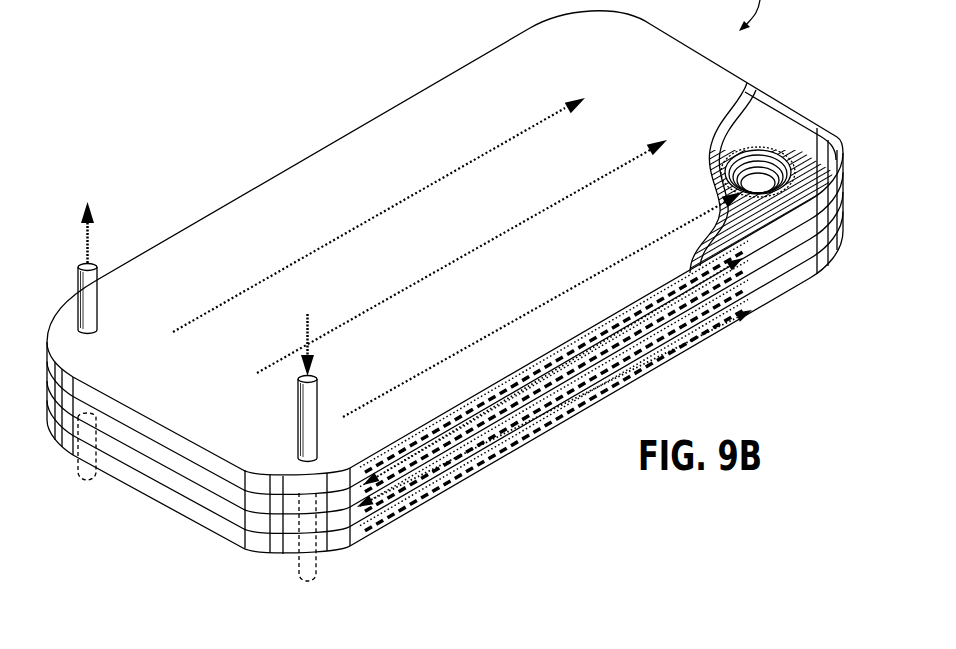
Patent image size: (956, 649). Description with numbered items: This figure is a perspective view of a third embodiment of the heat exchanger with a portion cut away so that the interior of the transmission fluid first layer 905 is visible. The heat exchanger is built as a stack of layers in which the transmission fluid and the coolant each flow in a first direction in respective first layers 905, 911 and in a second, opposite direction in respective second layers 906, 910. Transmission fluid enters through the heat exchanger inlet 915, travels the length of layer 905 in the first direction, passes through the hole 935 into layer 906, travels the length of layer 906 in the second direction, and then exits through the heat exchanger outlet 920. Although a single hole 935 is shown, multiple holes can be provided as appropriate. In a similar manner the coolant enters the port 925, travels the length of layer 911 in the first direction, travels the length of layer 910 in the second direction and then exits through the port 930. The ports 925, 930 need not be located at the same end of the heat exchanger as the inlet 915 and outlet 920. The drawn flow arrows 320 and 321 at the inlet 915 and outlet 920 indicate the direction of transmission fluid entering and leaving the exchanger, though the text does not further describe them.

The first layer 905 is at (843, 143).
The second layer 906 is at (797, 258).
The first layer 911 is at (830, 262).
The hole 935 is at (745, 153).
The second layer 910 is at (790, 243).
The heat exchanger outlet 920 is at (92, 307).
The pin insertion direction arrow 321 is at (92, 237).
The heat exchanger inlet 915 is at (319, 394).
The pin insertion direction arrow 320 is at (312, 318).
The port 925 is at (88, 483).
The port 930 is at (304, 580).